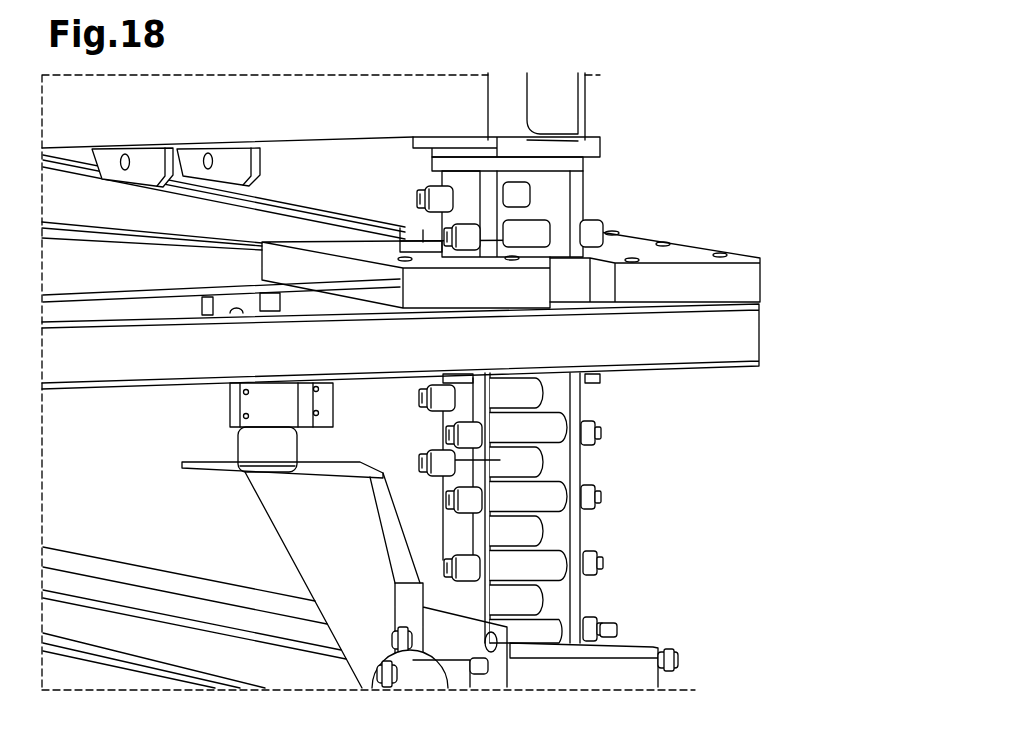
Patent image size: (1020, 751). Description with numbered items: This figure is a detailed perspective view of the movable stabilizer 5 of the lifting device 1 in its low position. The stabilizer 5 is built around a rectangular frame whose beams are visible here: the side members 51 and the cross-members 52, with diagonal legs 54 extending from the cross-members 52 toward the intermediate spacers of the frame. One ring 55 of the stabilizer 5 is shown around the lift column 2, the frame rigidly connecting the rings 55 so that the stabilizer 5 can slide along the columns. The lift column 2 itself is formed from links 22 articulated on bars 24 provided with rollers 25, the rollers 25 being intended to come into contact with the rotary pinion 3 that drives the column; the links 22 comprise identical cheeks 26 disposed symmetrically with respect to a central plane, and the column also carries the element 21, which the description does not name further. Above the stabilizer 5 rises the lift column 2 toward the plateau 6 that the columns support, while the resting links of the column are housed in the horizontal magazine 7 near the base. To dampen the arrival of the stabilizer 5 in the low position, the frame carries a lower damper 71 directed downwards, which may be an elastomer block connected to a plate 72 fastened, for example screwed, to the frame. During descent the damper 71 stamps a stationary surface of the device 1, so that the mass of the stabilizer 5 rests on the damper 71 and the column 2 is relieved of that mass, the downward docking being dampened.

The lifting device 1 is at (436, 405).
The lift column 2 is at (522, 486).
The rail 21 is at (598, 460).
The link 22 is at (584, 388).
The bar 24 is at (552, 497).
The roller 25 is at (586, 497).
The cheek 26 is at (426, 462).
The rotary pinion 3 is at (464, 694).
The movable stabilizer 5 is at (436, 263).
The side member 51 is at (153, 373).
The cross-member 52 is at (143, 222).
The diagonal leg 54 is at (108, 284).
The ring 55 is at (597, 243).
The plateau 6 is at (597, 98).
The magazine 7 is at (231, 511).
The lower damper 71 is at (286, 468).
The plate 72 is at (330, 393).